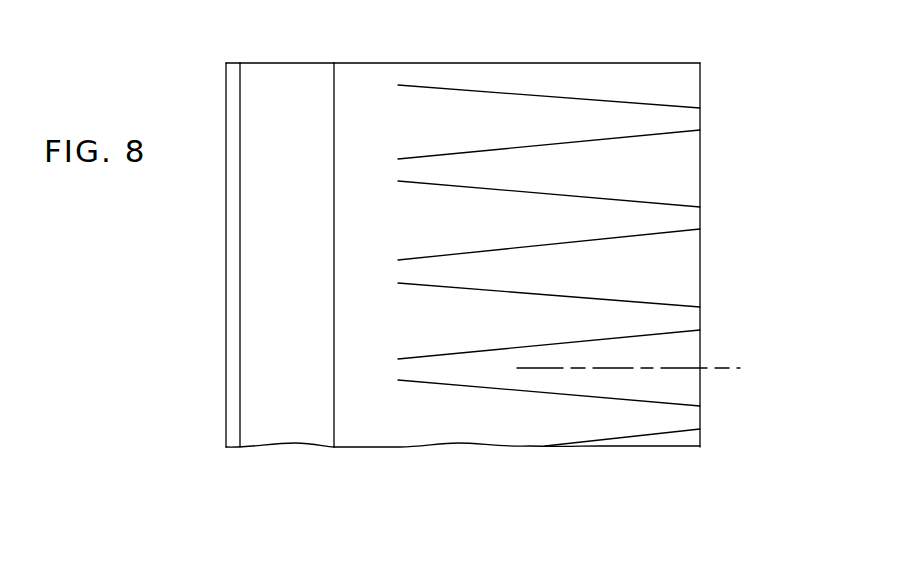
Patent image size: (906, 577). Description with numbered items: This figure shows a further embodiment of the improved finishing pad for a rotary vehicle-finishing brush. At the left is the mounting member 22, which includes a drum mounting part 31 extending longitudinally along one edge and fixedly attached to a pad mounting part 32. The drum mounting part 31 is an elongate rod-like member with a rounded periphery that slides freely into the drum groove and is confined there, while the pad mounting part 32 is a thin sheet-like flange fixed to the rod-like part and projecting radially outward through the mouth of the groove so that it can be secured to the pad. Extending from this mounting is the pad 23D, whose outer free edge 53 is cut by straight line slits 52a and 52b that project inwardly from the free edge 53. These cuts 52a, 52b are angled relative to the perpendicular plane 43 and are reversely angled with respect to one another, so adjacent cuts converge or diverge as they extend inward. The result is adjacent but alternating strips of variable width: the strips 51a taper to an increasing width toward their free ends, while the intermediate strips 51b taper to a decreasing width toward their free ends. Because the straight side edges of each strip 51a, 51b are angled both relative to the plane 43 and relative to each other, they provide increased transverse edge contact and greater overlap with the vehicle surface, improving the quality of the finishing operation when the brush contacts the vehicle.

The mounting member 22 is at (275, 63).
The pad 23D is at (371, 63).
The drum mounting part 31 is at (232, 255).
The pad mounting part 32 is at (256, 298).
The cut 52a is at (483, 91).
The cut 52b is at (573, 142).
The intermediate strip 51b is at (670, 121).
The strip 51a is at (668, 180).
The perpendicular plane 43 is at (718, 368).
The free edge 53 is at (703, 390).